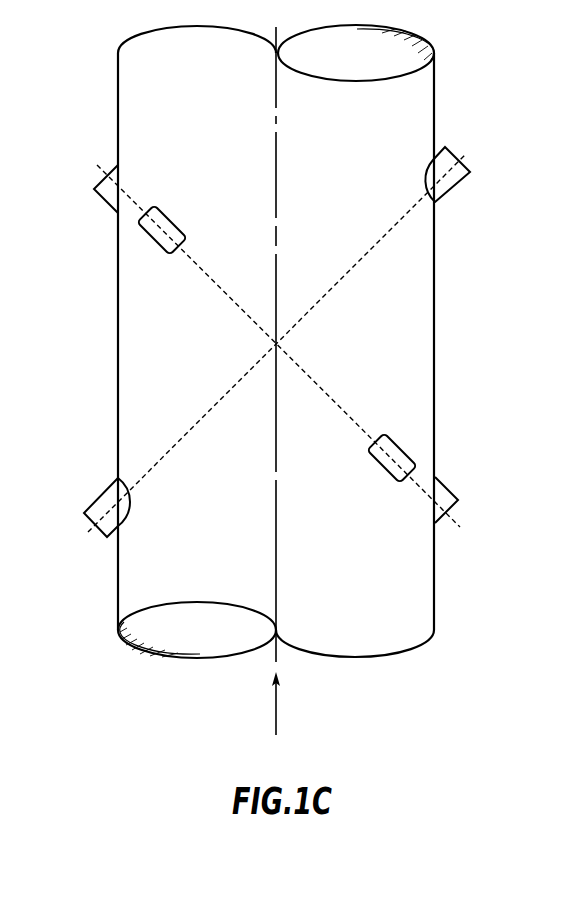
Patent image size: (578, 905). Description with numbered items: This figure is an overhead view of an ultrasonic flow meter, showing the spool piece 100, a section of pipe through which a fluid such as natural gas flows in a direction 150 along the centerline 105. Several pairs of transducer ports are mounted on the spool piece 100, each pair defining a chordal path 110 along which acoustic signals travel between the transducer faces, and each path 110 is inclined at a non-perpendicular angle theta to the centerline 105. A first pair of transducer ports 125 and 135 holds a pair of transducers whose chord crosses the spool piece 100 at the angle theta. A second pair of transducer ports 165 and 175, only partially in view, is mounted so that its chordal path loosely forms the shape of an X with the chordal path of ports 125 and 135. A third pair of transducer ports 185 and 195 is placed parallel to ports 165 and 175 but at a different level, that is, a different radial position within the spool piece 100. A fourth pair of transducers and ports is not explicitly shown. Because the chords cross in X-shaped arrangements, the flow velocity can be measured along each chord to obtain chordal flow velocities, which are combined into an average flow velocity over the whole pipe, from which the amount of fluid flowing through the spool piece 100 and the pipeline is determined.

The spool piece 100 is at (436, 70).
The centerline 105 is at (278, 120).
The path 110 is at (325, 296).
The transducer port 125 is at (457, 184).
The transducer port 135 is at (108, 485).
The flow direction 150 is at (278, 713).
The transducer port 165 is at (104, 198).
The transducer port 175 is at (447, 487).
The transducer port 185 is at (167, 212).
The transducer port 195 is at (380, 475).
The angle theta is at (274, 488).